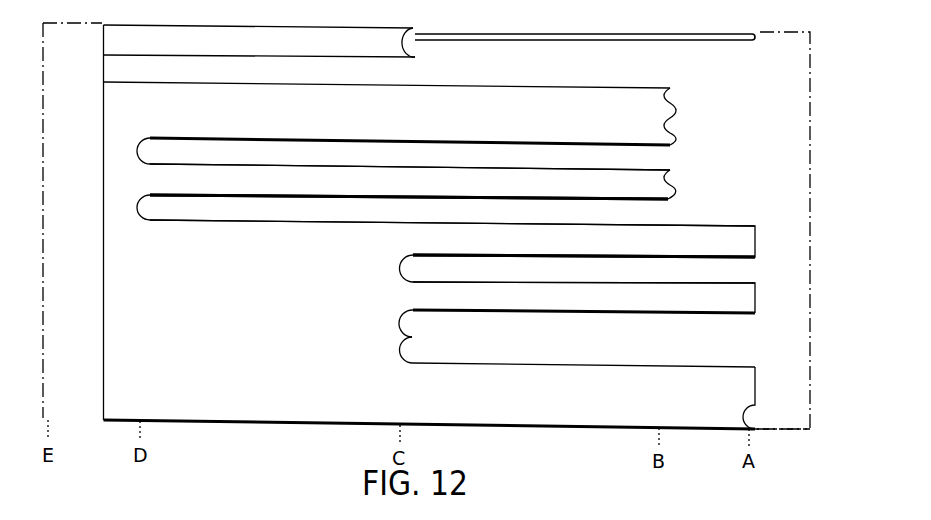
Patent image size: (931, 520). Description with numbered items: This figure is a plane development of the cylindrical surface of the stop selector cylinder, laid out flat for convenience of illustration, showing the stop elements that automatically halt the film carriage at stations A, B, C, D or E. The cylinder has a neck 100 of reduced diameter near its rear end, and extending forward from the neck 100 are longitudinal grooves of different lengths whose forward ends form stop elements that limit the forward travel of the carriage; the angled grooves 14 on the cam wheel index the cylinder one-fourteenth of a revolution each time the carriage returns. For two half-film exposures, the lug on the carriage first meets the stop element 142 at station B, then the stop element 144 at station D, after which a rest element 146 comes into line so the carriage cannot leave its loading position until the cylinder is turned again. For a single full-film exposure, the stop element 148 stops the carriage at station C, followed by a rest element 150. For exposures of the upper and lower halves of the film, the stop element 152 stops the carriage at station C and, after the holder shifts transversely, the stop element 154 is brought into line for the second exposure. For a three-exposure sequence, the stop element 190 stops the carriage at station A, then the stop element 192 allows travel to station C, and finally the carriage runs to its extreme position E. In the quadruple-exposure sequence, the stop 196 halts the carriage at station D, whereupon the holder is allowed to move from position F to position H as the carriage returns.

The longitudinal grooves 14 is at (783, 193).
The neck 100 is at (783, 412).
The stop element 142 is at (673, 187).
The stop element 144 is at (148, 212).
The rest element 146 is at (757, 240).
The stop element 148 is at (402, 261).
The rest element 150 is at (757, 298).
The stop element 152 is at (393, 322).
The stop element 154 is at (395, 352).
The stop element 190 is at (752, 413).
The stop element 192 is at (405, 46).
The stop 196 is at (140, 149).